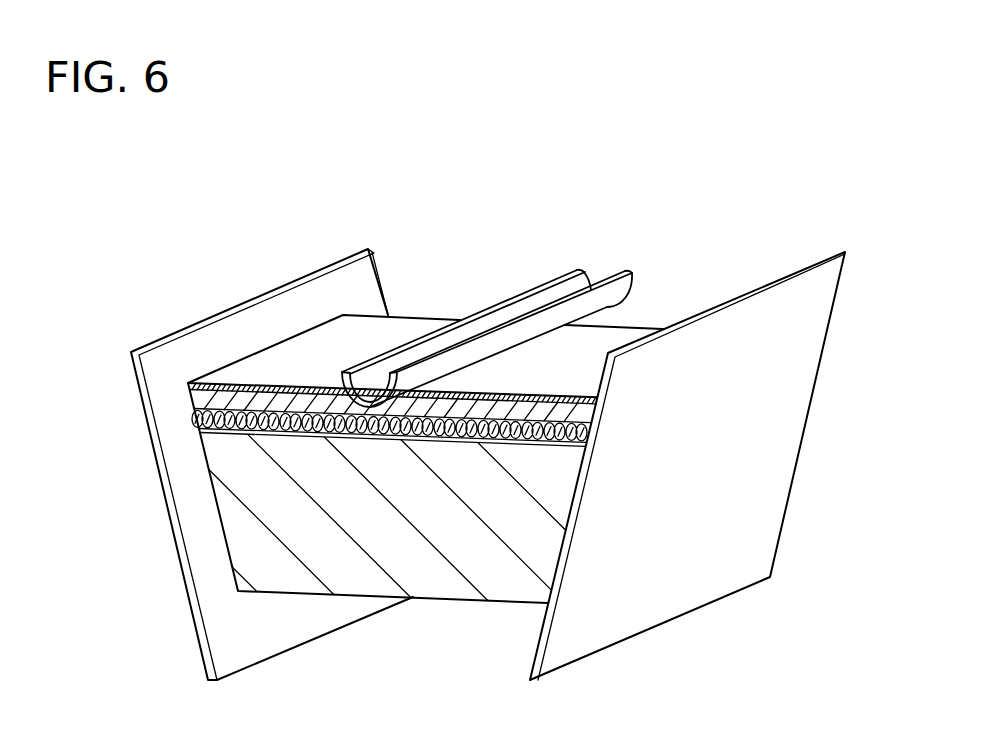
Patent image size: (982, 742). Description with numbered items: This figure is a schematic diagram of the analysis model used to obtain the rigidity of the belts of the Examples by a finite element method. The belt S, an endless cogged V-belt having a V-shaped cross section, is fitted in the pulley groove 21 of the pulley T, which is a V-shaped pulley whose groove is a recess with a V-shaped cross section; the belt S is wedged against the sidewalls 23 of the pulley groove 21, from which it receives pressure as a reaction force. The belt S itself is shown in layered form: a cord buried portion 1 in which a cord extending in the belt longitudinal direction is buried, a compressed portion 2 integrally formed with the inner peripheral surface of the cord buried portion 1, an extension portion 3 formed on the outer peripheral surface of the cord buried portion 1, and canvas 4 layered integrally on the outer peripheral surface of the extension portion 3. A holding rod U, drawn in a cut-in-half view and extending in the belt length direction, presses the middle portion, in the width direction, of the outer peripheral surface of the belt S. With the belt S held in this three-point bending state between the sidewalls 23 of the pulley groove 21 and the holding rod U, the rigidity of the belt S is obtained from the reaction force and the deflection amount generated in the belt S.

The cord buried portion 1 is at (189, 423).
The compressed portion 2 is at (190, 393).
The extension portion 3 is at (190, 387).
The canvas 4 is at (220, 513).
The pulley groove 21 is at (546, 192).
The sidewall 23 is at (233, 328).
The pulley T is at (312, 259).
The cogged V-belt S is at (426, 308).
The holding rod U is at (625, 288).